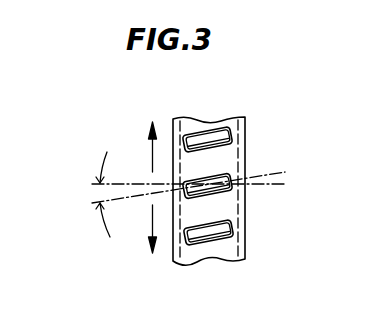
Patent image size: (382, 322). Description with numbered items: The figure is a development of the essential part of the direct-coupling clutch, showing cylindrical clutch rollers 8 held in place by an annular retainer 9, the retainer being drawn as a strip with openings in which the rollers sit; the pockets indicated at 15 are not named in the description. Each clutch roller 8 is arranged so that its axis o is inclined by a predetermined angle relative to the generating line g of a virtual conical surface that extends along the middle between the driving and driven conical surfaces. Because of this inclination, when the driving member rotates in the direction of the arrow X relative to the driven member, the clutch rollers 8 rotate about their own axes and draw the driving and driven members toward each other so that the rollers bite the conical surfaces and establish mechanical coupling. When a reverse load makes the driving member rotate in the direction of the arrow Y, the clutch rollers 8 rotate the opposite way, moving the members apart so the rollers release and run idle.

The clutch roller 8 is at (219, 127).
The annular retainer 9 is at (190, 121).
The louver tabs 15 is at (229, 177).
The generating line g is at (122, 183).
The axis o is at (122, 199).
The arrow X is at (152, 136).
The arrow Y is at (151, 243).